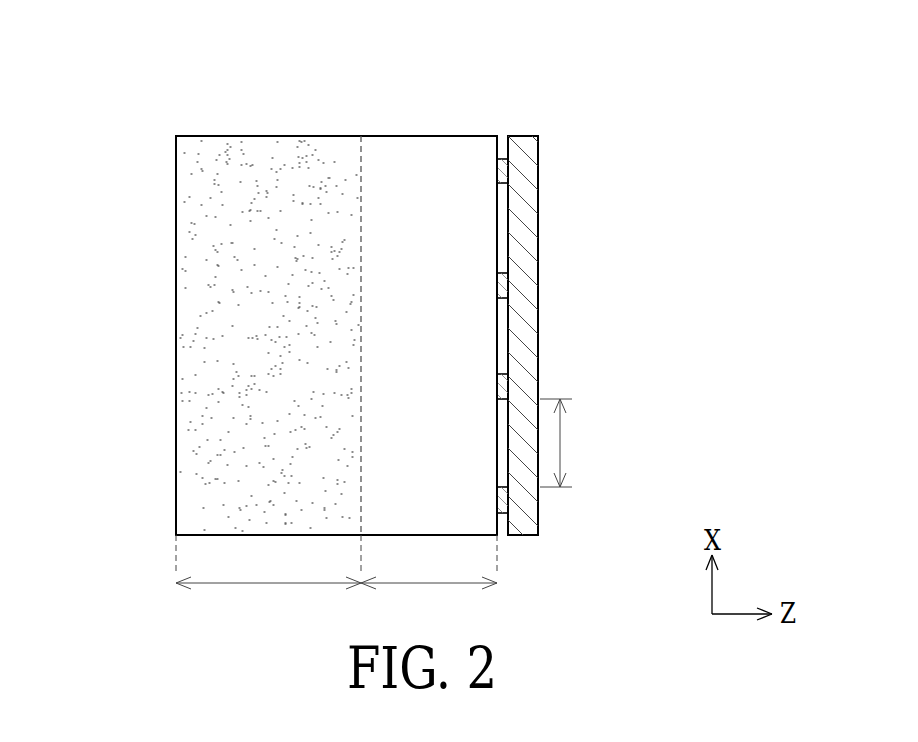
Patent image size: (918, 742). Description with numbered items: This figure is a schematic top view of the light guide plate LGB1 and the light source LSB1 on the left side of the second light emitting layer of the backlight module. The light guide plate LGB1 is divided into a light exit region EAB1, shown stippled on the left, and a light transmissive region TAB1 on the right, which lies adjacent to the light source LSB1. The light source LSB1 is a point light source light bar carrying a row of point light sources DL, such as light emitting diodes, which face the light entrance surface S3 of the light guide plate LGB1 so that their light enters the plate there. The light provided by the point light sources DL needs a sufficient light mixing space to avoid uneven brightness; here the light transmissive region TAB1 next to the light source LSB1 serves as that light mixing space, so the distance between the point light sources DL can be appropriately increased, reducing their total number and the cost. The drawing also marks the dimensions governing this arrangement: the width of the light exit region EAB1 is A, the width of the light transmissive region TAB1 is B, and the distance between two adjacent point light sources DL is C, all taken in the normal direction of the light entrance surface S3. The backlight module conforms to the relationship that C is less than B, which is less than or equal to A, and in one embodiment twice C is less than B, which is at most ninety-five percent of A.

The light guide plate LGB1 is at (176, 216).
The light exit region EAB1 is at (273, 162).
The light transmissive region TAB1 is at (427, 162).
The light source LSB1 is at (523, 216).
The point light source DL is at (501, 170).
The light entrance surface S3 is at (499, 525).
The distance between adjacent point light sources C is at (564, 443).
The width of the light exit region A is at (268, 578).
The width of the light transmissive region B is at (429, 579).